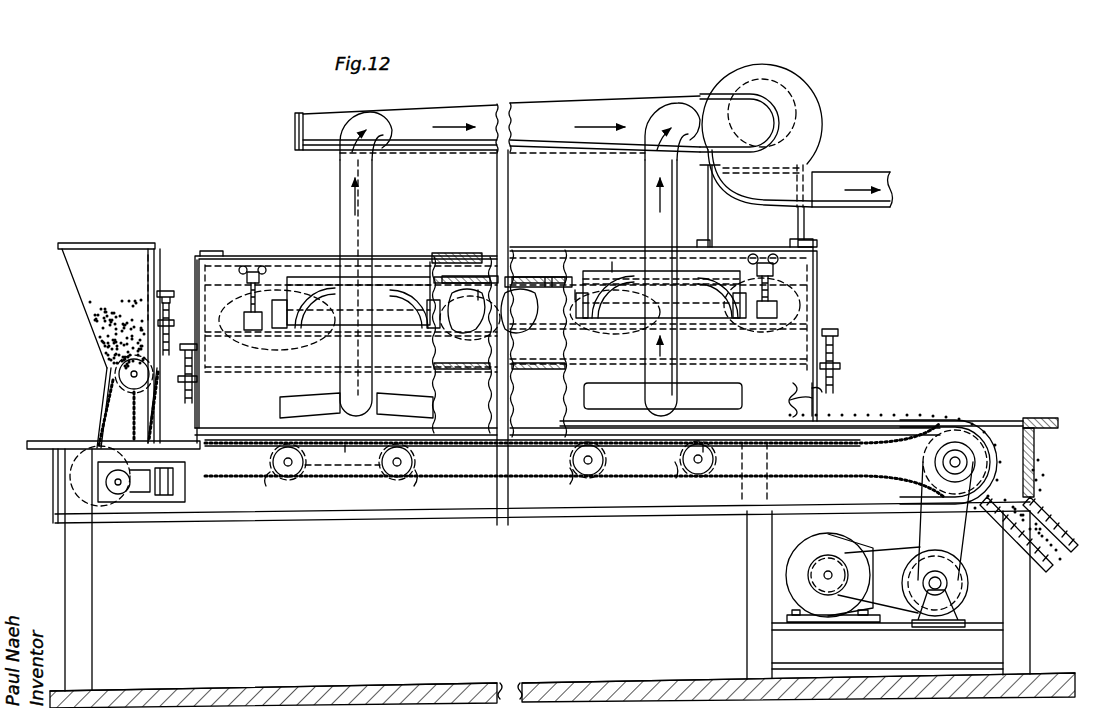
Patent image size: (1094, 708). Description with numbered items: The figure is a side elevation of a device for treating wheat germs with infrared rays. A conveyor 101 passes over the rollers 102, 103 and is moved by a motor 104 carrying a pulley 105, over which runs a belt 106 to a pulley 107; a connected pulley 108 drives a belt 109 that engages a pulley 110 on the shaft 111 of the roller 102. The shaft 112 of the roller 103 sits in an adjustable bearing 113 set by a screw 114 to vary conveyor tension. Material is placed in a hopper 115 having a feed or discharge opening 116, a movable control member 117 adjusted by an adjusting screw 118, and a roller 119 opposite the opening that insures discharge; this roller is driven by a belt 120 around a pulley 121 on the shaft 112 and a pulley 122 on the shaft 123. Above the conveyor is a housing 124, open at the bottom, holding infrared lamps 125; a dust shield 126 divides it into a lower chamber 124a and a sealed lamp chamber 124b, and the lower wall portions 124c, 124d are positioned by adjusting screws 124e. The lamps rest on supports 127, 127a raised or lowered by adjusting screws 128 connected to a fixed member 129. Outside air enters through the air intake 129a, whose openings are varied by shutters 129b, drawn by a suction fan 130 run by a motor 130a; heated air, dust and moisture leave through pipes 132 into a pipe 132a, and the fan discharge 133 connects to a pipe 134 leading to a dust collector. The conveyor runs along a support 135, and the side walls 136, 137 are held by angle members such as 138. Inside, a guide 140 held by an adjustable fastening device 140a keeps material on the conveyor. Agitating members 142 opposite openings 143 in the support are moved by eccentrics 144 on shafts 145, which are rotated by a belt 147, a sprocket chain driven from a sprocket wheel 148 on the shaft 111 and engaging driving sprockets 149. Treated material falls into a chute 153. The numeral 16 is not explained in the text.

The air flow direction 16 is at (353, 240).
The conveyor 101 is at (118, 434).
The roller 102 is at (1000, 455).
The roller 103 is at (125, 522).
The motor 104 is at (802, 549).
The pulley 105 is at (808, 576).
The belt 106 is at (898, 556).
The pulley 107 is at (965, 590).
The pulley 108 is at (937, 572).
The belt 109 is at (925, 520).
The pulley 110 is at (947, 418).
The shaft 111 is at (962, 452).
The shaft 112 is at (125, 491).
The adjustable bearing 113 is at (116, 494).
The screw 114 is at (163, 496).
The hopper 115 is at (70, 279).
The feed or discharge opening 116 is at (158, 414).
The movable control member 117 is at (183, 329).
The adjusting screw 118 is at (183, 297).
The roller 119 is at (133, 373).
The belt 120 is at (103, 396).
The pulley 121 is at (100, 440).
The pulley 122 is at (110, 373).
The shaft 123 is at (100, 336).
The housing 124 is at (212, 240).
The chamber 124a is at (812, 400).
The chamber 124b is at (480, 290).
The lower portion of front wall 124c is at (203, 417).
The lower portion of rear wall 124d is at (815, 395).
The adjusting screws 124e is at (190, 391).
The infrared lamps 125 is at (310, 343).
The dust shield 126 is at (453, 348).
The support 127 is at (442, 270).
The support 127a is at (240, 278).
The adjusting screws 128 is at (250, 262).
The fixed member 129 is at (245, 328).
The air intake 129a is at (310, 278).
The shutters 129b is at (300, 278).
The suction fan 130 is at (815, 98).
The motor 130a is at (797, 68).
The pipes 132 is at (340, 185).
The pipe 132a is at (515, 108).
The discharge 133 is at (812, 212).
The pipe 134 is at (873, 173).
The support 135 is at (33, 441).
The side wall 136 is at (507, 268).
The side wall 137 is at (422, 262).
The angle member 138 is at (223, 437).
The guide 140 is at (472, 416).
The adjustable fastening device 140a is at (578, 403).
The agitating members 142 is at (330, 404).
The openings 143 is at (410, 413).
The eccentrics 144 is at (703, 488).
The shafts 145 is at (277, 479).
The belt 147 is at (797, 436).
The sprocket wheel 148 is at (932, 458).
The driving sprockets 149 is at (283, 473).
The chute 153 is at (1063, 503).